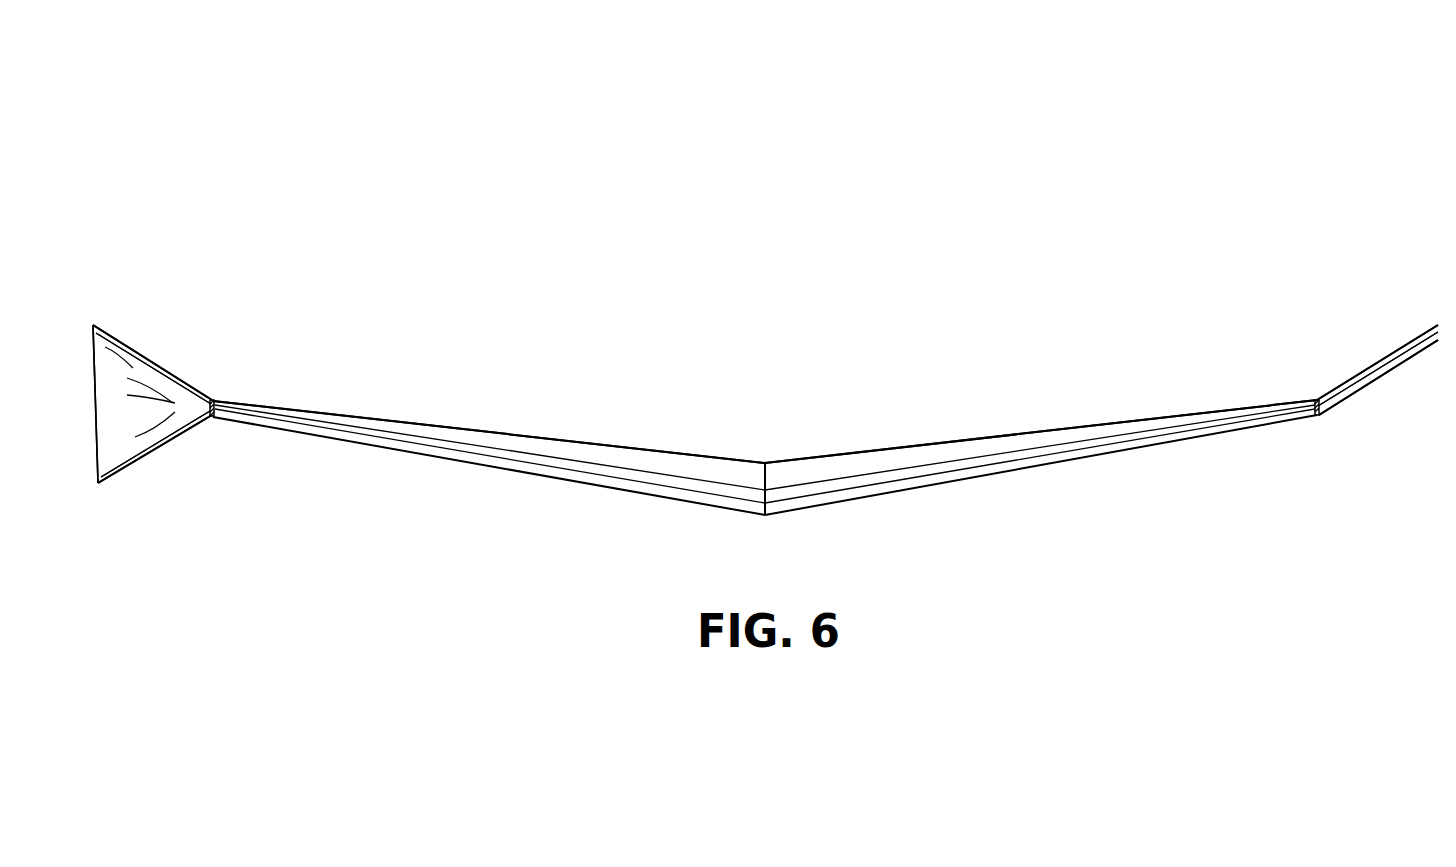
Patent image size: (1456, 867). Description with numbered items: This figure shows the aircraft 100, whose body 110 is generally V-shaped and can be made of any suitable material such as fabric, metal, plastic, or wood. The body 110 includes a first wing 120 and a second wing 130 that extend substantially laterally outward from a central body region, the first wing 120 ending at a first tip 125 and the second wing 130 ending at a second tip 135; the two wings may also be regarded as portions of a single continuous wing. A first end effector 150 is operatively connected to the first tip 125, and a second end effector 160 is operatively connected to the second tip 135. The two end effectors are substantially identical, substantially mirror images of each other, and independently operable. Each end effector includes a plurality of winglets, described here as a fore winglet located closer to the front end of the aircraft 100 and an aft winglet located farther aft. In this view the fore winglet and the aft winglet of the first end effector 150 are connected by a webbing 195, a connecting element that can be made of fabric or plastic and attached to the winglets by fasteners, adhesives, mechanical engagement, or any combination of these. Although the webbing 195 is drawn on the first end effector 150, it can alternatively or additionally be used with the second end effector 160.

The aircraft 100 is at (779, 138).
The body 110 is at (737, 508).
The first wing 120 is at (598, 457).
The first tip 125 is at (240, 413).
The second wing 130 is at (923, 457).
The second tip 135 is at (1303, 408).
The first end effector 150 is at (158, 308).
The second end effector 160 is at (1328, 334).
The webbing 195 is at (105, 435).